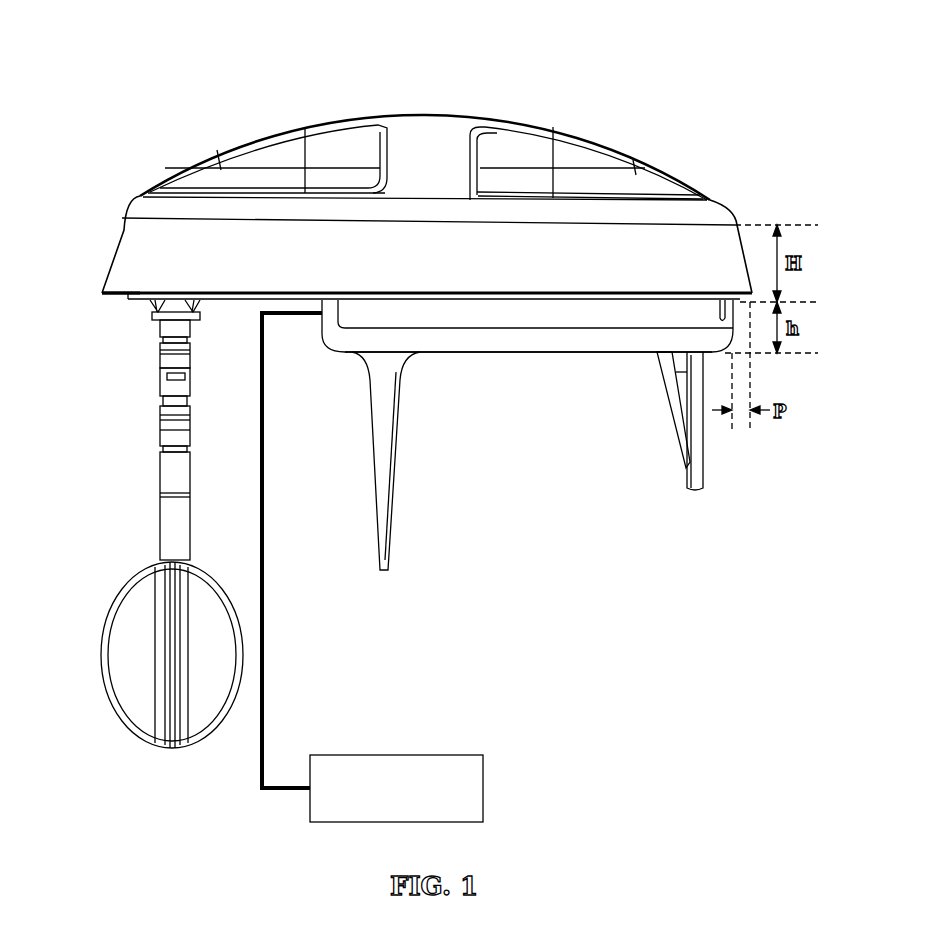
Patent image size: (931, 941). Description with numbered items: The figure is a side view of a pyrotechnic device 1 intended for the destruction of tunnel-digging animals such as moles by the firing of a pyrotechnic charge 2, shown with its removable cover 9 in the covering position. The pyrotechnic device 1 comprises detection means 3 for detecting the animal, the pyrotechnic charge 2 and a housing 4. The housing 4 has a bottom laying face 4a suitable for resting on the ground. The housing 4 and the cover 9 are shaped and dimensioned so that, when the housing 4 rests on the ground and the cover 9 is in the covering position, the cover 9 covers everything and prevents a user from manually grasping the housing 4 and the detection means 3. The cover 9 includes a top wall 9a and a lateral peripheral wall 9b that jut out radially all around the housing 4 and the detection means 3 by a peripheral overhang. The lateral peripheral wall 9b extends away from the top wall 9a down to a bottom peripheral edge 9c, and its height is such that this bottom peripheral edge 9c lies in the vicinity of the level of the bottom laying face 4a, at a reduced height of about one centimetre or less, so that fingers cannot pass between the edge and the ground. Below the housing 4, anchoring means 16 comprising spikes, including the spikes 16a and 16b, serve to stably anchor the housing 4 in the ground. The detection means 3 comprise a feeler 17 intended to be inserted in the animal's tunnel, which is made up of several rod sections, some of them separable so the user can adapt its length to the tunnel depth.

The pyrotechnic device 1 is at (288, 98).
The pyrotechnic charge 2 is at (372, 567).
The detection means 3 is at (140, 415).
The housing 4 is at (575, 336).
The bottom laying face 4a is at (498, 353).
The cover 9 is at (577, 114).
The top wall 9a is at (413, 128).
The lateral peripheral wall 9b is at (120, 250).
The bottom peripheral edge 9c is at (103, 290).
The anchoring means 16 is at (492, 461).
The spike 16a is at (381, 515).
The spike 16b is at (697, 438).
The feeler 17 is at (167, 470).